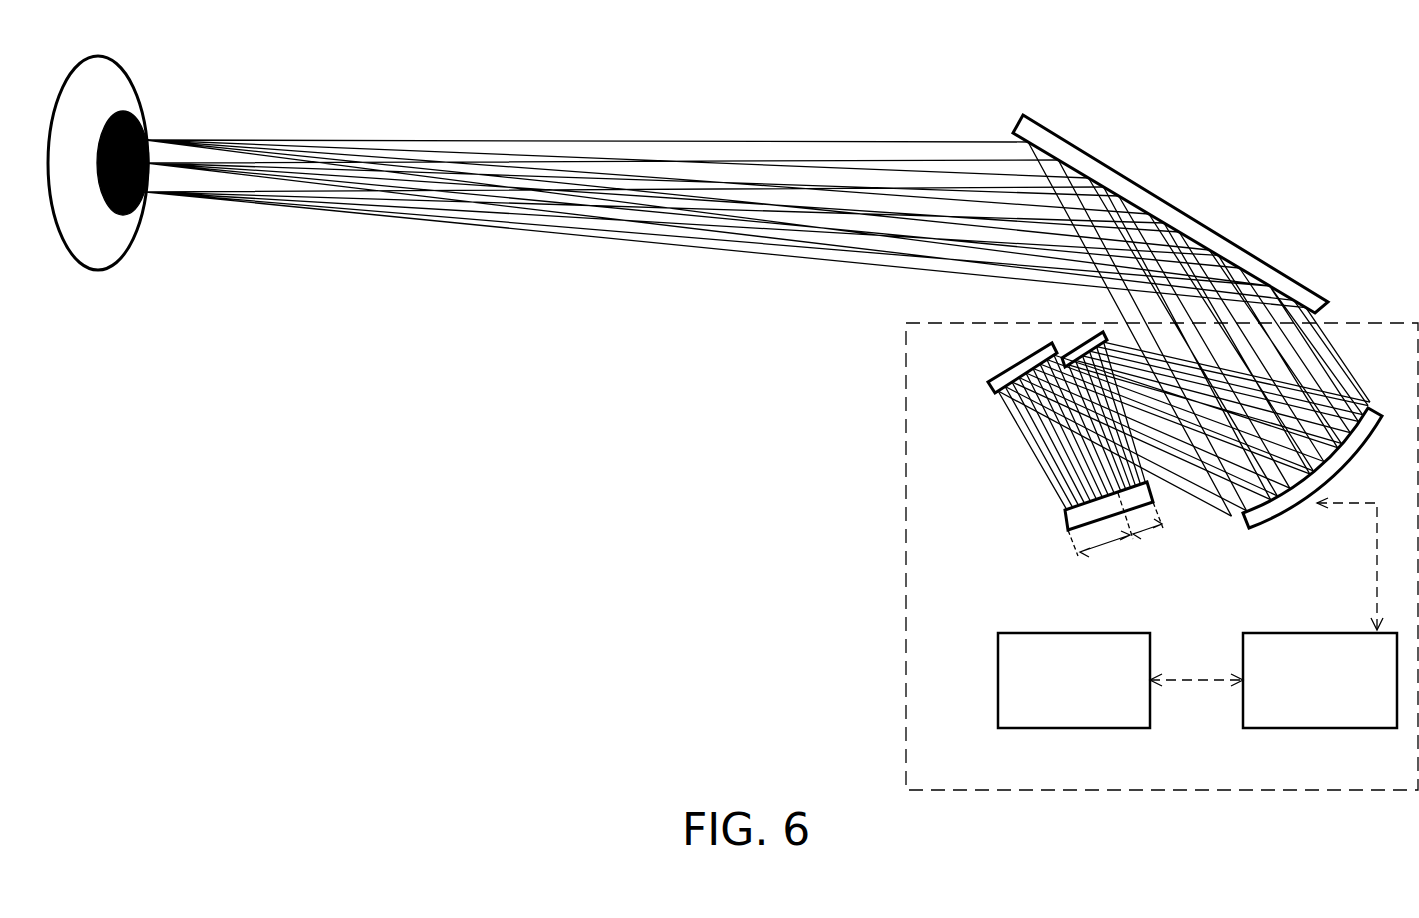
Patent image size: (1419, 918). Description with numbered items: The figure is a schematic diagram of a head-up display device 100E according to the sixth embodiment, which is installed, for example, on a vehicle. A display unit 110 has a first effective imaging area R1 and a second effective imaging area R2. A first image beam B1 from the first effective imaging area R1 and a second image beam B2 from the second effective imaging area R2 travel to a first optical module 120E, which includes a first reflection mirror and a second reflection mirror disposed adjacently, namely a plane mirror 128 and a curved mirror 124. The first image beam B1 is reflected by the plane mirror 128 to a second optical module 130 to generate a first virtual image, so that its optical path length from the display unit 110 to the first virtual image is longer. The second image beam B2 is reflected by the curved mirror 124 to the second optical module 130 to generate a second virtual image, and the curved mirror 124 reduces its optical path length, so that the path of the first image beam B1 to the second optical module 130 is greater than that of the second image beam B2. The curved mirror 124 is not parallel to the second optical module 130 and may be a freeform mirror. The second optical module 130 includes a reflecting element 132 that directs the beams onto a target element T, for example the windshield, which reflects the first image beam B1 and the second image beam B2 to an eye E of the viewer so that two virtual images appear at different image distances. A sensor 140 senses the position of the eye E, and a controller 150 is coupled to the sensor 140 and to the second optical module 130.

The eye E is at (127, 87).
The target element T is at (1142, 190).
The head-up display device 100E is at (906, 533).
The display unit 110 is at (1068, 522).
The first optical module 120E is at (1012, 382).
The curved mirror 124 is at (1075, 335).
The plane mirror 128 is at (1020, 360).
The second optical module 130 is at (1312, 499).
The curved reflector 132 is at (1282, 515).
The sensor 140 is at (1073, 730).
The controller 150 is at (1320, 730).
The first image beam B1 is at (1035, 453).
The second image beam B2 is at (1160, 478).
The first effective imaging area R1 is at (1100, 538).
The second effective imaging area R2 is at (1153, 537).